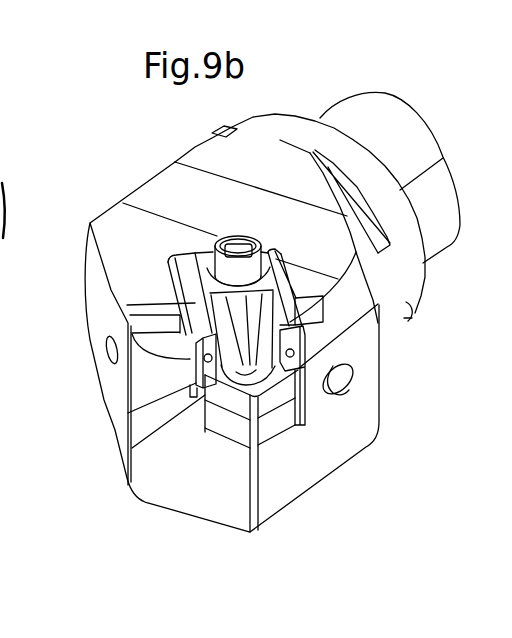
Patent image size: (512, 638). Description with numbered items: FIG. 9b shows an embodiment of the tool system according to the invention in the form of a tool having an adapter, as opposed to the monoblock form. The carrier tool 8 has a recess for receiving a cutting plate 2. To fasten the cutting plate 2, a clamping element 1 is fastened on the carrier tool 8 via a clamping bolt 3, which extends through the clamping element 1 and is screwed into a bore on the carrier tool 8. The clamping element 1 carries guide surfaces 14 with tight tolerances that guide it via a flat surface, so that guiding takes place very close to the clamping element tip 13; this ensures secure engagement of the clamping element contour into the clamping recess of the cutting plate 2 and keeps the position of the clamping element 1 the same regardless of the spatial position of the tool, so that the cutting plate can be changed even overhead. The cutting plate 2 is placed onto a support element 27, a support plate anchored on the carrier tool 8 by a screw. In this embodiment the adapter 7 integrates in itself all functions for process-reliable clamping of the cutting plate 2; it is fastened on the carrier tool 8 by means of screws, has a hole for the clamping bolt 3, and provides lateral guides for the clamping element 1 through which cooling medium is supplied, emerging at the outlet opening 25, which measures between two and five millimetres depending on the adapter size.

The clamping element 1 is at (250, 338).
The cutting plate 2 is at (272, 398).
The clamping bolt 3 is at (217, 243).
The adapter 7 is at (297, 322).
The carrier tool 8 is at (407, 308).
The clamping element tip 13 is at (205, 416).
The guide surfaces 14 is at (193, 305).
The outlet opening 25 is at (247, 367).
The support element 27 is at (222, 423).